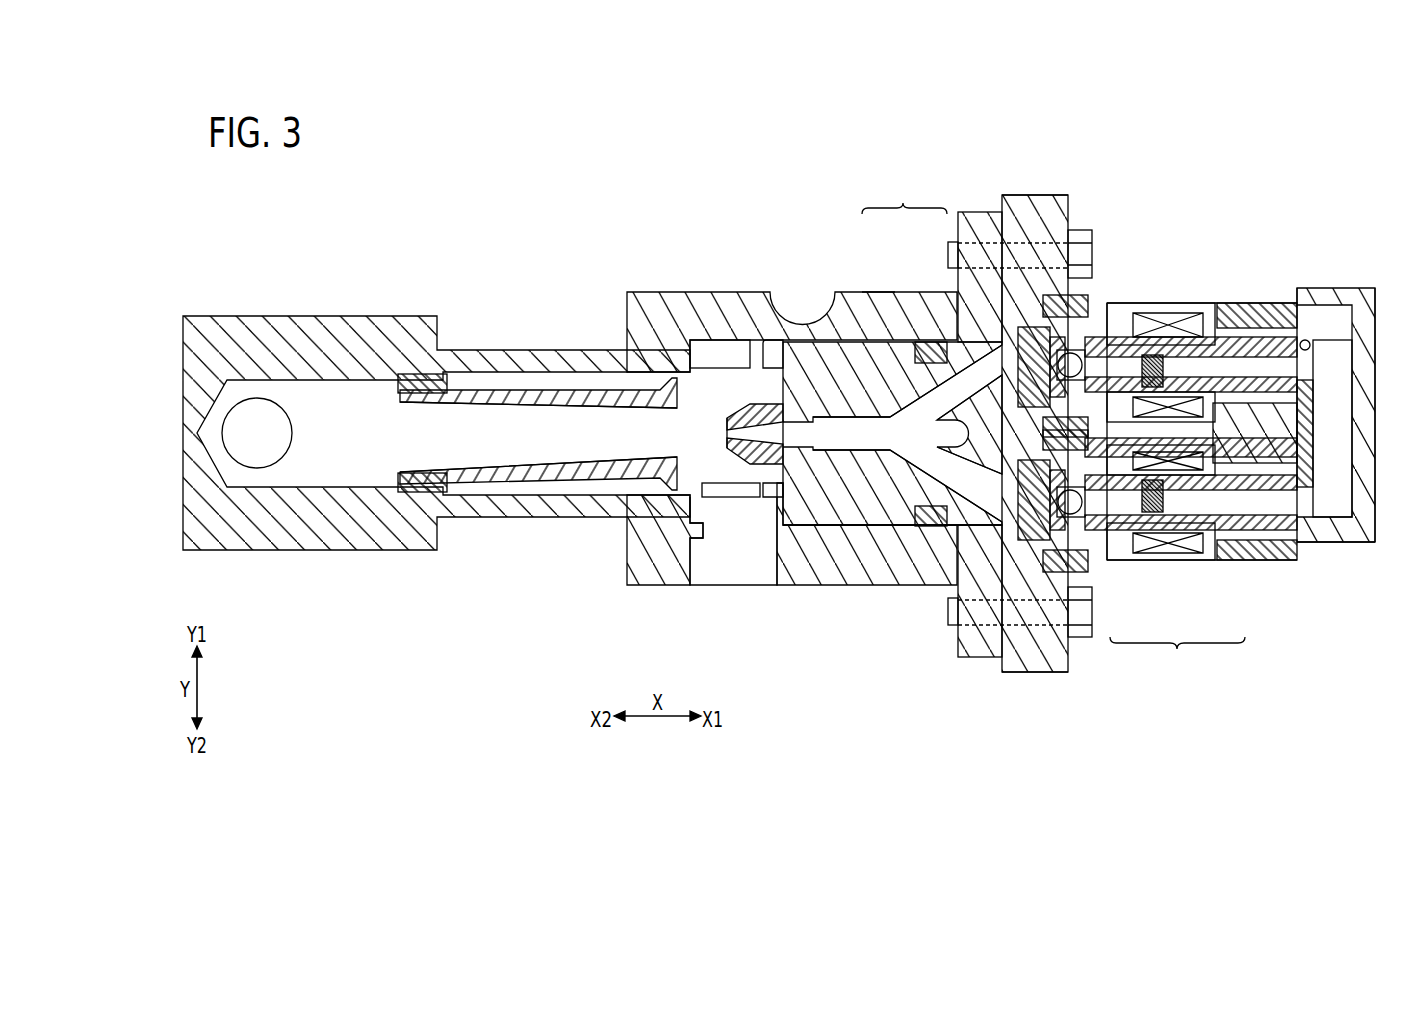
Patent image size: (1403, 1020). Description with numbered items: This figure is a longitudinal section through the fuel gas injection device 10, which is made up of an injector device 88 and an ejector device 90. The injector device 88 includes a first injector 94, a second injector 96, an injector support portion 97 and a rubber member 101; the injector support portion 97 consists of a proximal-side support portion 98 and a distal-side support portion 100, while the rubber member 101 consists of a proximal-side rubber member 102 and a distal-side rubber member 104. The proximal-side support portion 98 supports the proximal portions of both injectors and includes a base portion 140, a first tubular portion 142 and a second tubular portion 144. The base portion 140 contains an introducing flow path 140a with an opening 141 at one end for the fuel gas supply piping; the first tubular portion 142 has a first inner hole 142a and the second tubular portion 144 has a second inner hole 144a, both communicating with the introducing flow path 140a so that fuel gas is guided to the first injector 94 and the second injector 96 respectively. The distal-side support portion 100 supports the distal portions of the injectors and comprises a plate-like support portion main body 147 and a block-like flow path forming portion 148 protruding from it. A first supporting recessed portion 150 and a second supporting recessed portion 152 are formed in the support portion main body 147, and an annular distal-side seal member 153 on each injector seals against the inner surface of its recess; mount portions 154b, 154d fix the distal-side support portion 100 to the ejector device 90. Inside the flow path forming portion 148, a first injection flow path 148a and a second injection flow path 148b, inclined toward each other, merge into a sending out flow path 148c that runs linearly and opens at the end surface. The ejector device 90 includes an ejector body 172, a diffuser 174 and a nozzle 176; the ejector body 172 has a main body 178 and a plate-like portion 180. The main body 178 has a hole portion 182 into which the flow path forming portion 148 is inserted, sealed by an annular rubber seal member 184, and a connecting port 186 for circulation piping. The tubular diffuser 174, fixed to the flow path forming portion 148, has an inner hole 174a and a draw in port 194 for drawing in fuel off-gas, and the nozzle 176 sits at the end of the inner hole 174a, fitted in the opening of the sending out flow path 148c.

The fuel gas injection device 10 is at (354, 198).
The injector device 88 is at (1224, 270).
The ejector device 90 is at (682, 279).
The first injector 94 is at (1177, 330).
The second injector 96 is at (1180, 520).
The injector support portion 97 is at (1295, 287).
The proximal-side support portion 98 is at (1372, 540).
The distal-side support portion 100 is at (830, 510).
The rubber member 101 is at (1202, 486).
The proximal-side rubber member 102 is at (1225, 570).
The distal-side rubber member 104 is at (1080, 575).
The base portion 140 is at (1335, 330).
The introducing flow path 140a is at (1332, 460).
The opening 141 is at (1357, 300).
The first tubular portion 142 is at (1255, 315).
The first inner hole 142a is at (1320, 345).
The second tubular portion 144 is at (1278, 560).
The second inner hole 144a is at (1305, 480).
The support portion main body 147 is at (1030, 225).
The flow path forming portion 148 is at (885, 508).
The first injection flow path 148a is at (985, 375).
The second injection flow path 148b is at (985, 500).
The sending out flow path 148c is at (853, 430).
The first supporting recessed portion 150 is at (1003, 290).
The second supporting recessed portion 152 is at (1015, 672).
The distal-side seal member 153 is at (1045, 290).
The mount portion 154b is at (1082, 221).
The mount portion 154d is at (1082, 639).
The ejector body 172 is at (904, 199).
The diffuser 174 is at (520, 395).
The inner hole 174a is at (525, 440).
The nozzle 176 is at (750, 405).
The main body 178 is at (875, 300).
The plate-like portion 180 is at (957, 278).
The hole portion 182 is at (722, 350).
The rubber seal member 184 is at (928, 525).
The connecting port 186 is at (745, 570).
The draw in port 194 is at (722, 500).